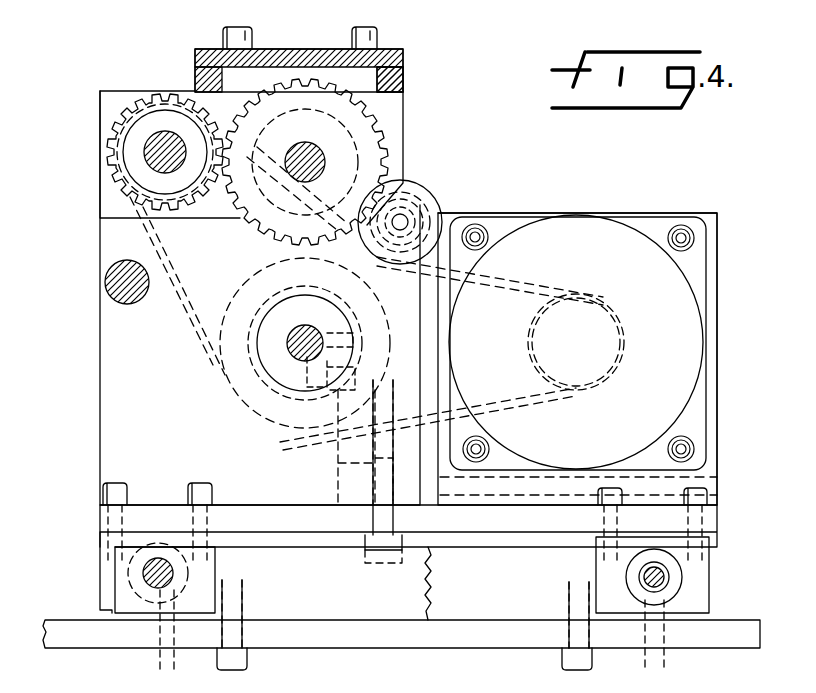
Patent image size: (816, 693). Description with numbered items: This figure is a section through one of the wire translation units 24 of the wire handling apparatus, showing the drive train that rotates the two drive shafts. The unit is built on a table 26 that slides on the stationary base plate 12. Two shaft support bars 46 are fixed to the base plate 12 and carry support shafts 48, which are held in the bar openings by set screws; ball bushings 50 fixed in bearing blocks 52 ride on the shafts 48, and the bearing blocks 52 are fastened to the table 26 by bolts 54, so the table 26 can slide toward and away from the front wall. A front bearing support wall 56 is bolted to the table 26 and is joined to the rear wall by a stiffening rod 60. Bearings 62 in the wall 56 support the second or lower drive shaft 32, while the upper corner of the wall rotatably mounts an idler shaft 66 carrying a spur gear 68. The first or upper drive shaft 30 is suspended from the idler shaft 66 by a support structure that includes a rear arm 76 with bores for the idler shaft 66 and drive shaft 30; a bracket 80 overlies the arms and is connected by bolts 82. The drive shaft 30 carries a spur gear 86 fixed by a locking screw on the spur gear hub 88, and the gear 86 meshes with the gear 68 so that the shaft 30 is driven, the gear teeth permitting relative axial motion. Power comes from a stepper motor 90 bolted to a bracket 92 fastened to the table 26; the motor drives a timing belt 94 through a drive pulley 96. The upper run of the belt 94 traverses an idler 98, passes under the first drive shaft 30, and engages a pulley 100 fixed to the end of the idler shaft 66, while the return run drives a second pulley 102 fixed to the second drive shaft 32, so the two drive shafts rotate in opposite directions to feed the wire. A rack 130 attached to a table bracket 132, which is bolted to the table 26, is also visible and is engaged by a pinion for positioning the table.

The base plate 12 is at (760, 631).
The right wire translation unit 24 is at (748, 480).
The table 26 is at (100, 516).
The first drive shaft 30 is at (320, 160).
The second drive shaft 32 is at (297, 348).
The shaft support bar 46 is at (458, 612).
The support shaft 48 is at (156, 588).
The ball bushing 50 is at (168, 600).
The bearing block 52 is at (115, 570).
The bolt 54 is at (200, 483).
The front bearing support wall 56 is at (100, 405).
The stiffening rod 60 is at (105, 283).
The bearing 62 is at (270, 375).
The idler shaft 66 is at (150, 152).
The spur gear 68 is at (153, 95).
The rear arm 76 is at (100, 197).
The bracket 80 is at (403, 52).
The bolt 82 is at (355, 32).
The spur gear 86 is at (385, 122).
The spur gear hub 88 is at (213, 45).
The stepper motor 90 is at (378, 74).
The motor bracket 92 is at (717, 422).
The timing belt 94 is at (500, 285).
The drive pulley 96 is at (530, 346).
The idler 98 is at (428, 192).
The pulley 100 is at (108, 112).
The second pulley 102 is at (195, 322).
The rack 130 is at (282, 440).
The table bracket 132 is at (338, 478).